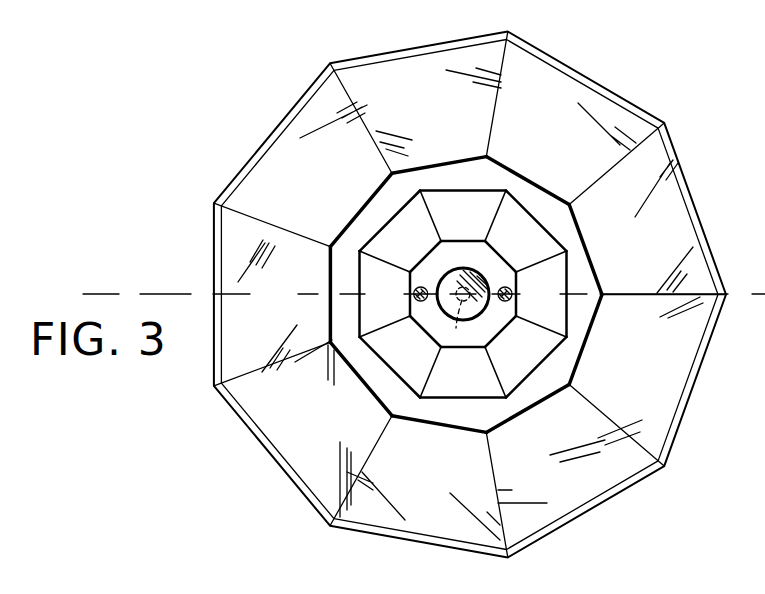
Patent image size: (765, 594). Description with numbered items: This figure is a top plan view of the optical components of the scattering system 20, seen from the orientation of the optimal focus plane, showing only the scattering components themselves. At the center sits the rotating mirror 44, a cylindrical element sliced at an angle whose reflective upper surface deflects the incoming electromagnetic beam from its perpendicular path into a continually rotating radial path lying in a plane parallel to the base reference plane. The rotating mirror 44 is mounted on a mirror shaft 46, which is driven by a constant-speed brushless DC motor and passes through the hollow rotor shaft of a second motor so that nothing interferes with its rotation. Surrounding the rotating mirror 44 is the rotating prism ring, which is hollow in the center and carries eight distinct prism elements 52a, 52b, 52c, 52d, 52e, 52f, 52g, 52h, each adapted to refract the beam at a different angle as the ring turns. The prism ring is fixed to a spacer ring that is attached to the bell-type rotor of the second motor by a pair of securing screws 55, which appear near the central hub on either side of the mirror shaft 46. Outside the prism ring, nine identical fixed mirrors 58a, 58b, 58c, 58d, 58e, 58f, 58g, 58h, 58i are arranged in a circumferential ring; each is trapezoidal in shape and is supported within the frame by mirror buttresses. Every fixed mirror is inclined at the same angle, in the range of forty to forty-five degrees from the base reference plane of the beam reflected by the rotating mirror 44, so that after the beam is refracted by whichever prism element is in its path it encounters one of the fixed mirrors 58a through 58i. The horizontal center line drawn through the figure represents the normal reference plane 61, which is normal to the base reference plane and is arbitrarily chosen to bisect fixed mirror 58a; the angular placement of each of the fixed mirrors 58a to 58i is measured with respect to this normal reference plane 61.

The scattering system 20 is at (654, 101).
The rotating mirror 44 is at (474, 277).
The mirror shaft 46 is at (471, 316).
The securing screws 55 is at (509, 291).
The normal reference plane 61 is at (163, 294).
The prism element 52a is at (403, 309).
The prism element 52b is at (422, 255).
The prism element 52c is at (481, 227).
The prism element 52d is at (542, 255).
The prism element 52e is at (557, 315).
The prism element 52f is at (535, 363).
The prism element 52g is at (478, 384).
The prism element 52h is at (430, 363).
The fixed mirror 58a is at (292, 306).
The fixed mirror 58b is at (335, 188).
The fixed mirror 58c is at (454, 111).
The fixed mirror 58d is at (577, 140).
The fixed mirror 58e is at (668, 240).
The fixed mirror 58f is at (666, 374).
The fixed mirror 58g is at (579, 482).
The fixed mirror 58h is at (445, 497).
The fixed mirror 58i is at (330, 427).